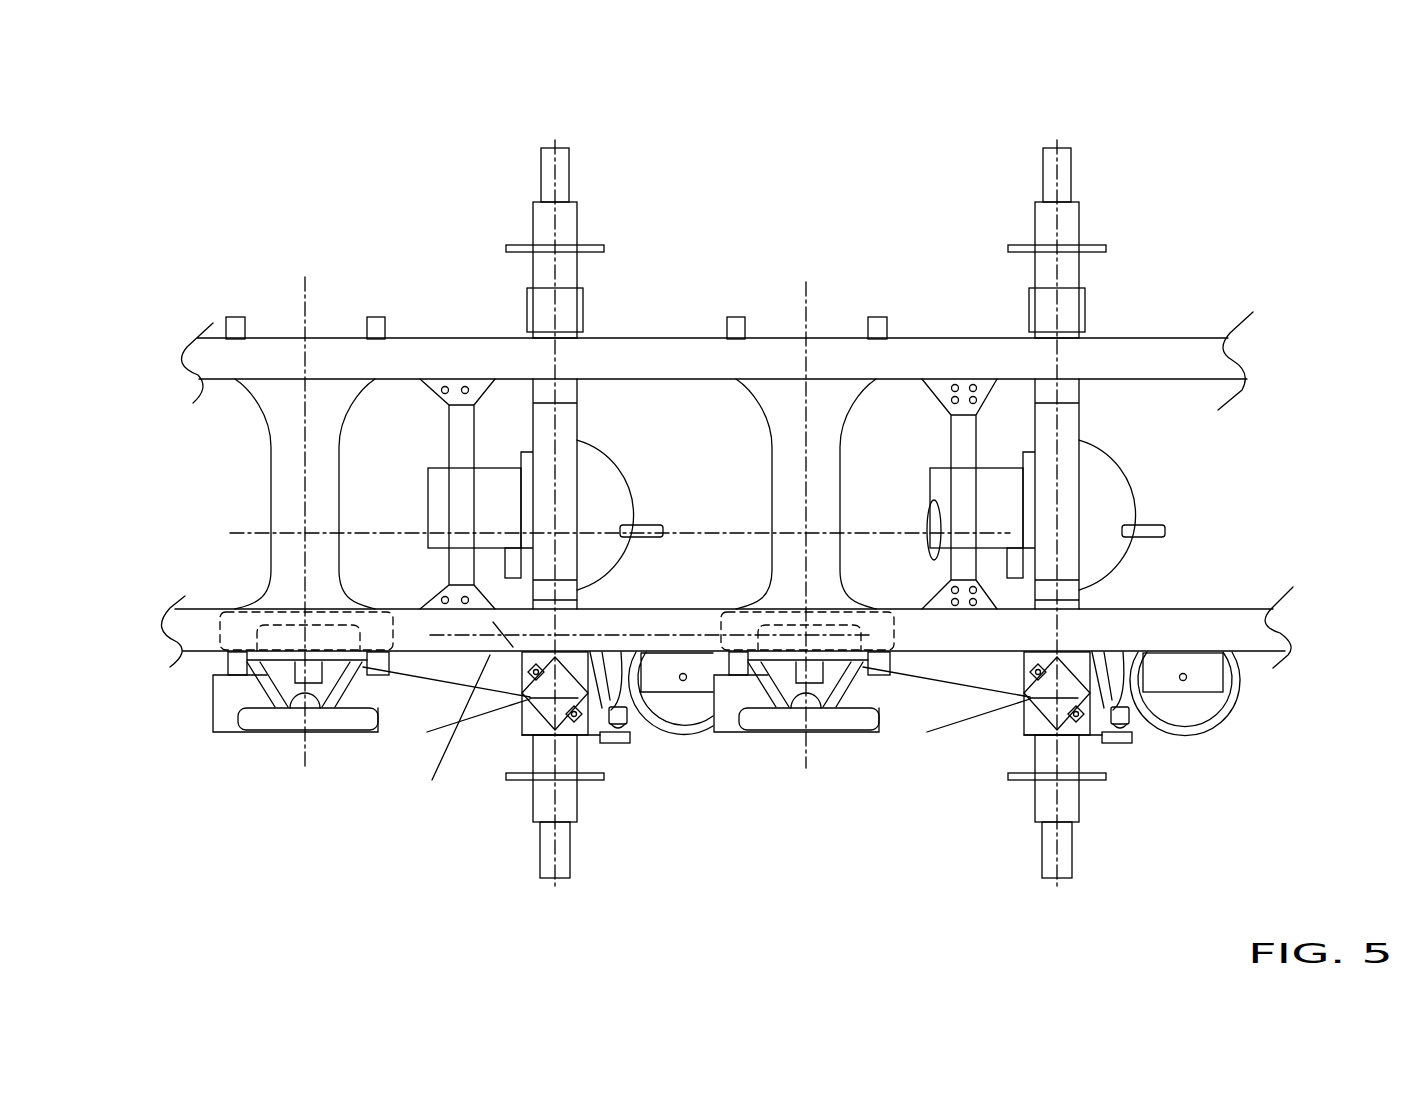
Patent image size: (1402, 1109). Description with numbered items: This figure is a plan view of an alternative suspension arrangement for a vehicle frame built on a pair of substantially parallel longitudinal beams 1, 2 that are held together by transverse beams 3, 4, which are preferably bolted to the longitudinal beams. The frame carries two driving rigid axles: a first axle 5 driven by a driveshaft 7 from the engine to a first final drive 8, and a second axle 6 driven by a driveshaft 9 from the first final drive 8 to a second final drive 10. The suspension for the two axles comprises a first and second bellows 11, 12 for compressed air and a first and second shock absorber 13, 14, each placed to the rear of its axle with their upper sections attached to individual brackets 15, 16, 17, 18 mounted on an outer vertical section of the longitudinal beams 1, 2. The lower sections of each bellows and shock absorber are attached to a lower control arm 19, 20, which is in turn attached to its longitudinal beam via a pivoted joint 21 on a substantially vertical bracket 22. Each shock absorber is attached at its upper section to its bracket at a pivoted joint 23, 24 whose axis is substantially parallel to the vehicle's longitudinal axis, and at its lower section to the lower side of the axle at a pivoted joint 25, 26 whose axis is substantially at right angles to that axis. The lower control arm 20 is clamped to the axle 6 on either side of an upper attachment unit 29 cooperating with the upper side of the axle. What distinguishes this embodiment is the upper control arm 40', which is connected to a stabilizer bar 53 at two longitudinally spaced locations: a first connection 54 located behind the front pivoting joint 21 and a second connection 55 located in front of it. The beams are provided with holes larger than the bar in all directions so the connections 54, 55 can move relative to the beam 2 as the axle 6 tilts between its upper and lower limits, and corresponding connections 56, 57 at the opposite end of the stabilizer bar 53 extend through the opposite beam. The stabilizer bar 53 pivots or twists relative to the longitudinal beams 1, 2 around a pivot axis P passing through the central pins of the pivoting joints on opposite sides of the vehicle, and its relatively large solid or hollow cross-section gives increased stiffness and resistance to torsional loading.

The longitudinal beam 1 is at (1182, 347).
The longitudinal beam 2 is at (1213, 622).
The transverse beam 3 is at (452, 488).
The transverse beam 4 is at (957, 482).
The first axle 5 is at (1082, 155).
The second axle 6 is at (580, 155).
The driveshaft 7 is at (262, 535).
The first final drive 8 is at (1143, 472).
The driveshaft 9 is at (725, 530).
The second final drive 10 is at (605, 447).
The first bellows 11 is at (1198, 735).
The second bellows 12 is at (640, 728).
The first shock absorber 13 is at (1120, 742).
The second shock absorber 14 is at (600, 742).
The bracket 15 is at (1205, 682).
The bracket 16 is at (700, 688).
The bracket 17 is at (1135, 727).
The bracket 18 is at (628, 733).
The lower control arm 19 is at (917, 747).
The lower control arm 20 is at (473, 748).
The pivoted joint 21 is at (272, 742).
The bracket 22 is at (228, 665).
The pivoted joint 23 is at (1124, 745).
The pivoted joint 24 is at (615, 732).
The pivoted joint 25 is at (1138, 748).
The pivoted joint 26 is at (618, 750).
The upper attachment unit 29 is at (533, 298).
The upper control arm 40' is at (470, 790).
The stabilizer bar 53 is at (283, 492).
The first connection 54 is at (380, 743).
The second connection 55 is at (208, 694).
The connection 56 is at (377, 315).
The connection 57 is at (232, 317).
The pivot axis P is at (304, 292).